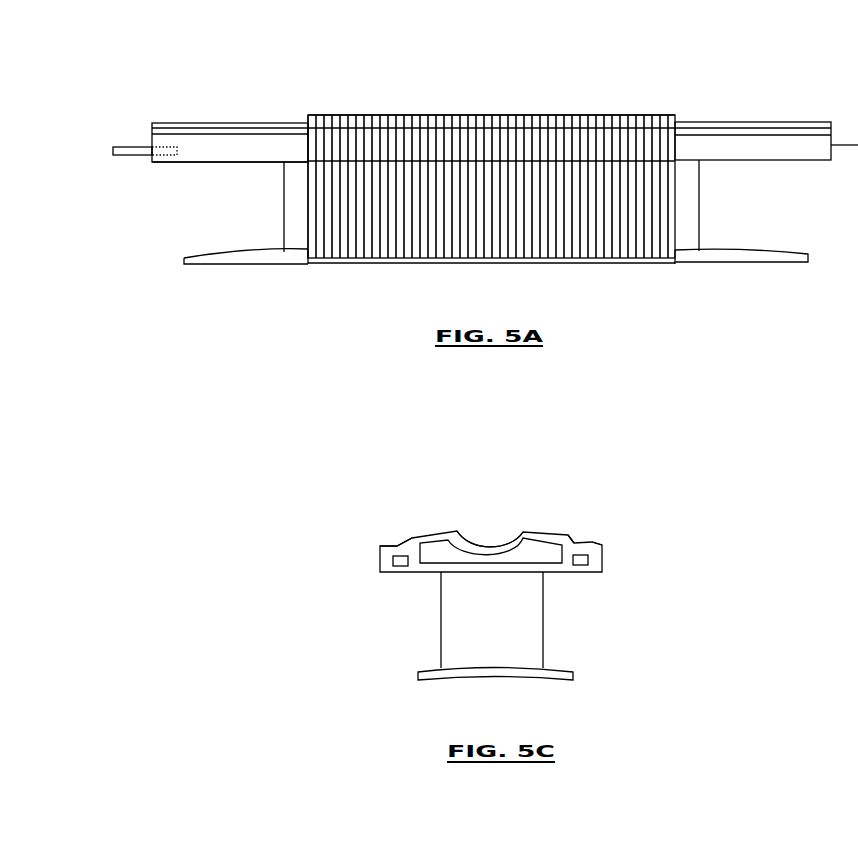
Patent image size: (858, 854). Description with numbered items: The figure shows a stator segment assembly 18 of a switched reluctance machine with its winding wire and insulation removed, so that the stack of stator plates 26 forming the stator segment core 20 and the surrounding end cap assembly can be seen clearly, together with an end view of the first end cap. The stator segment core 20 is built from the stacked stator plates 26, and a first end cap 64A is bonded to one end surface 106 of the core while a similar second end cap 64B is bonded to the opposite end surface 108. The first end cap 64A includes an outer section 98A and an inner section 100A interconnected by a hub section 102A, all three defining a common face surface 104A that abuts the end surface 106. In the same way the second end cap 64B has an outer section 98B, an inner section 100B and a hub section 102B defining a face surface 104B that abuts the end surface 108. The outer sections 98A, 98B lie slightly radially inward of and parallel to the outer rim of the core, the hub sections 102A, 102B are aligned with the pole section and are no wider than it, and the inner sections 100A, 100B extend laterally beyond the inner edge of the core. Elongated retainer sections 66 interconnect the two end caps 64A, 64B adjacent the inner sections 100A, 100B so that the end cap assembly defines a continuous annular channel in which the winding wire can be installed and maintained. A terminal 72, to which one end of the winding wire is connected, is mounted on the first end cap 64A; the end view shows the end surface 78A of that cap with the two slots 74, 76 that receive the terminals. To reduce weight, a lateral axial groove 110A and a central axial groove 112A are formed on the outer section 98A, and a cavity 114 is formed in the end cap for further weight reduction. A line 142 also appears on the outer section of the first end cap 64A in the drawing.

In FIG. 5A, the stator segment assembly 18 is at (613, 80).
In FIG. 5A, the stator segment core 20 is at (490, 93).
In FIG. 5A, the stator plates 26 is at (325, 117).
In FIG. 5A, the first end cap 64A is at (201, 118).
In FIG. 5C, the first end cap 64A is at (571, 490).
In FIG. 5A, the second end cap 64B is at (788, 120).
In FIG. 5A, the retainer sections 66 is at (433, 260).
In FIG. 5A, the second terminal 72 is at (128, 157).
In FIG. 5C, the slot 74 is at (402, 568).
In FIG. 5C, the slot 76 is at (583, 565).
In FIG. 5A, the end surface 78A is at (152, 137).
In FIG. 5C, the end surface 78A is at (388, 550).
In FIG. 5A, the outer section 98A is at (222, 155).
In FIG. 5C, the outer section 98A is at (597, 543).
In FIG. 5A, the outer section 98B is at (803, 153).
In FIG. 5A, the inner section 100A is at (237, 263).
In FIG. 5C, the inner section 100A is at (443, 674).
In FIG. 5A, the inner section 100B is at (730, 248).
In FIG. 5A, the hub section 102A is at (293, 212).
In FIG. 5C, the hub section 102A is at (452, 629).
In FIG. 5A, the hub section 102B is at (690, 202).
In FIG. 5A, the face surface 104A is at (308, 257).
In FIG. 5A, the face surface 104B is at (675, 257).
In FIG. 5A, the end surface 106 is at (308, 168).
In FIG. 5A, the end surface 108 is at (677, 140).
In FIG. 5C, the lateral axial groove 110A is at (400, 542).
In FIG. 5C, the central axial groove 112A is at (488, 545).
In FIG. 5C, the cavity 114 is at (443, 540).
In FIG. 5A, the upper surface line 142 is at (257, 123).